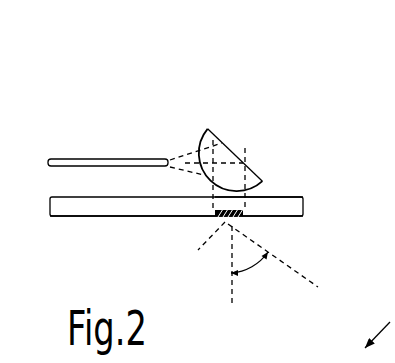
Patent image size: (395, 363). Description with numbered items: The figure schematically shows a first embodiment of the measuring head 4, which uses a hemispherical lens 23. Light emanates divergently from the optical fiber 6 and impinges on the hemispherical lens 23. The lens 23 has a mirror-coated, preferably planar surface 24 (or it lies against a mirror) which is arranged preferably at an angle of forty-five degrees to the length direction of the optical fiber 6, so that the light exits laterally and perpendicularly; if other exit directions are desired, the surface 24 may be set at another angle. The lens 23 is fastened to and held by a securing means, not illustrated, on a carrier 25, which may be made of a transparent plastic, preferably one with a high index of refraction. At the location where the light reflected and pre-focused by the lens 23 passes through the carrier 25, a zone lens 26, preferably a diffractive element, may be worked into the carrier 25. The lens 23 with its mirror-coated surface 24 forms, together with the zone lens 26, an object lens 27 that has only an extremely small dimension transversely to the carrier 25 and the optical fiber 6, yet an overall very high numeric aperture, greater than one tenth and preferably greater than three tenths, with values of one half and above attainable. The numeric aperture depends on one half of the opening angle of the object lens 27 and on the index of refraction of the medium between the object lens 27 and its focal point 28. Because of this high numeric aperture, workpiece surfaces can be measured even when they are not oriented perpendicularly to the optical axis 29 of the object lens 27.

The measuring head 4 is at (213, 75).
The optical fiber 6 is at (73, 159).
The hemispherical lens 23 is at (200, 137).
The mirror-coated planar surface 24 is at (217, 133).
The carrier 25 is at (105, 210).
The zone lens 26 is at (262, 208).
The object lens 27 is at (280, 148).
The focal point 28 is at (233, 224).
The optical axis 29 is at (232, 244).